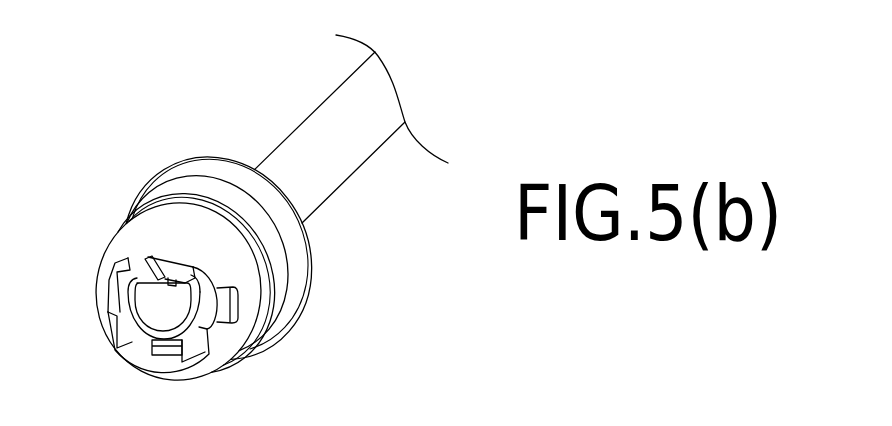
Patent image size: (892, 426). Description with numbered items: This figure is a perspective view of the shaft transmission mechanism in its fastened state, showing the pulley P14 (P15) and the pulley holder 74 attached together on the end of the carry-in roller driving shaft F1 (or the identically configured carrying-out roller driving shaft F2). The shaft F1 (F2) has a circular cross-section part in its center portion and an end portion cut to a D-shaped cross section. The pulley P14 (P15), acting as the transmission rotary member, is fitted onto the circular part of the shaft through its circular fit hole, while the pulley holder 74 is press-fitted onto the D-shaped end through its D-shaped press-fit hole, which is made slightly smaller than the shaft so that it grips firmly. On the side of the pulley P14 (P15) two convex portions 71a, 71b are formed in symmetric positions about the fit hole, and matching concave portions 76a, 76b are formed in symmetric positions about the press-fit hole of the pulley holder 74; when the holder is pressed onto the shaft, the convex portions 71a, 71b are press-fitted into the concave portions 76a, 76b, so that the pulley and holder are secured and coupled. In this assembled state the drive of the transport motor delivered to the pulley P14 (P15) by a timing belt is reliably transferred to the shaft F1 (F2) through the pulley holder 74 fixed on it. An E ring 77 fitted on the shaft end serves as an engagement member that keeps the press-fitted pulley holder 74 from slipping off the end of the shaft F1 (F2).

The carry-in roller driving shaft F1 is at (336, 114).
The carrying-out roller driving shaft F2 is at (317, 107).
The carry-in roller driving pulley P14 is at (215, 220).
The carrying-out roller driving pulley P15 is at (201, 156).
The pulley holder 74 is at (130, 230).
The convex portion 71a is at (238, 319).
The convex portion 71b is at (122, 282).
The concave portion 76a is at (240, 299).
The concave portion 76b is at (118, 296).
The E ring 77 is at (122, 362).